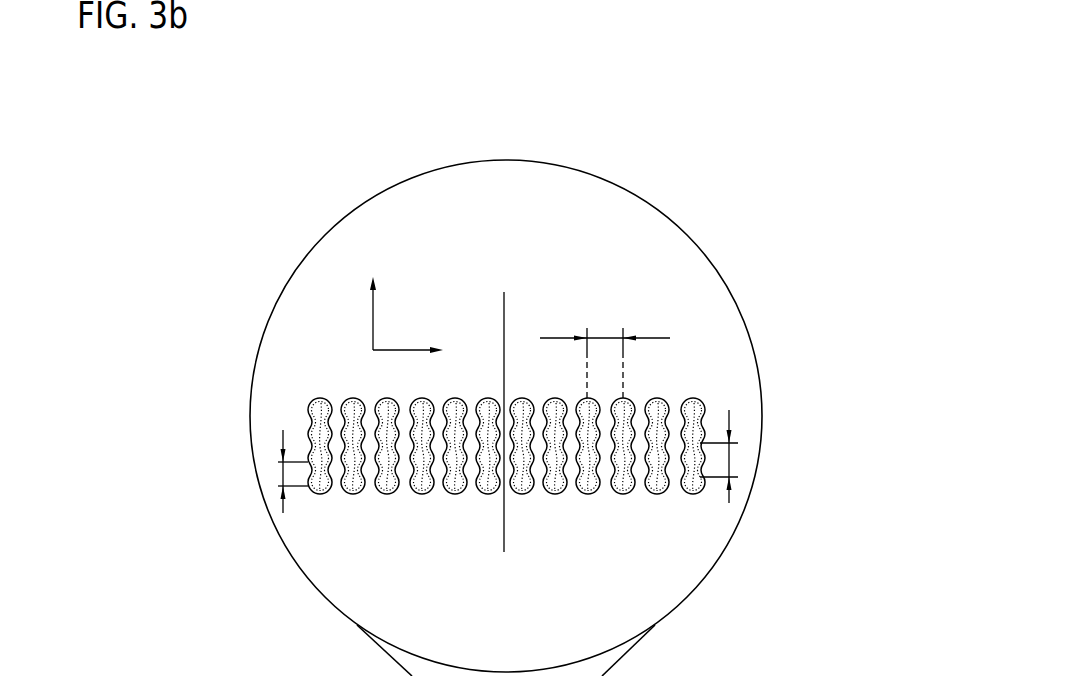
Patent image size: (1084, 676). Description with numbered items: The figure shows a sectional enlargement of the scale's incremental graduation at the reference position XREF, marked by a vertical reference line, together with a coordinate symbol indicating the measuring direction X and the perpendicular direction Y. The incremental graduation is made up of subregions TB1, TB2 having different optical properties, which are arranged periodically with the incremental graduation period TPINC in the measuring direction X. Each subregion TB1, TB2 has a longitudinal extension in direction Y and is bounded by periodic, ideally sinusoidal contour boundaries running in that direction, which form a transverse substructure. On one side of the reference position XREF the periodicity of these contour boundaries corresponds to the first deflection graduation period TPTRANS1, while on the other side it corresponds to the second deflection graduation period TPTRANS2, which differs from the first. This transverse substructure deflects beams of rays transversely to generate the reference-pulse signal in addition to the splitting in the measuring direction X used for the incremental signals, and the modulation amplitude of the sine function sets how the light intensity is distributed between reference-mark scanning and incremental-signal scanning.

The reference position XREF is at (504, 300).
The incremental graduation period TPINC is at (605, 338).
The first deflection graduation period TPTRANS1 is at (281, 464).
The second deflection graduation period TPTRANS2 is at (738, 463).
The subregion TB1 is at (558, 480).
The subregion TB2 is at (637, 468).
The measuring direction X is at (420, 344).
The direction of longitudinal extension Y is at (385, 296).